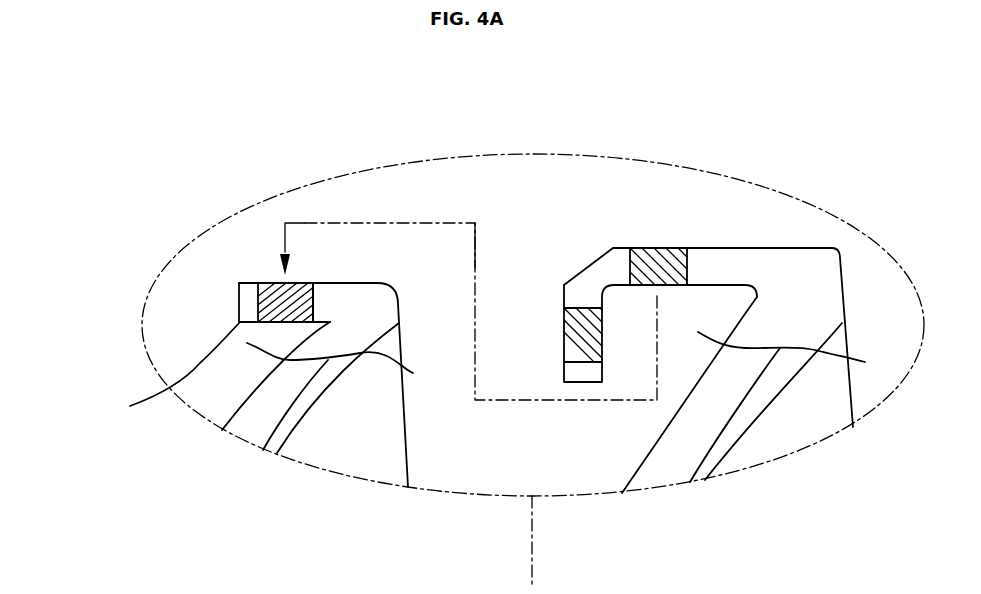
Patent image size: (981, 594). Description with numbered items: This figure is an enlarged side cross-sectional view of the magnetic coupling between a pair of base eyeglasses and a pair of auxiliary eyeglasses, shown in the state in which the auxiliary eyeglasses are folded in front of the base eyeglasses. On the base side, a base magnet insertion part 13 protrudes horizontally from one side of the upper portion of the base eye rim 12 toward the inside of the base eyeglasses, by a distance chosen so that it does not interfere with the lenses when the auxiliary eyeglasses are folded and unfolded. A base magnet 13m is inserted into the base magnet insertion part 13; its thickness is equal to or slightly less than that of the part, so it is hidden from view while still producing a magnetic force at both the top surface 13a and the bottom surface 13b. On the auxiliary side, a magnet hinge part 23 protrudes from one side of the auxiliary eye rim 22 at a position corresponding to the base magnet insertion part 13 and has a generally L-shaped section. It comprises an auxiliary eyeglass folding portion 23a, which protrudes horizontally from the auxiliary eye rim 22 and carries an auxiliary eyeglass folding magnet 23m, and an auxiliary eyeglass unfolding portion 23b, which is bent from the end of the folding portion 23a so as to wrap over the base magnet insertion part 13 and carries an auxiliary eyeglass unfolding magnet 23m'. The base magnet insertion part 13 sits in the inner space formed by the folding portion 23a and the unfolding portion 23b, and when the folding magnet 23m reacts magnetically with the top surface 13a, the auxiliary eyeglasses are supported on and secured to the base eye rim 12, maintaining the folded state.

The base eye rim 12 is at (250, 413).
The base magnet insertion part 13 is at (192, 200).
The top surface 13a is at (323, 283).
The bottom surface 13b is at (130, 406).
The base magnet 13m is at (277, 283).
The auxiliary eye rim 22 is at (690, 432).
The magnet hinge part 23 is at (589, 182).
The auxiliary eyeglass folding portion 23a is at (733, 247).
The auxiliary eyeglass unfolding portion 23b is at (564, 303).
The auxiliary eyeglass folding magnet 23m is at (660, 174).
The auxiliary eyeglass unfolding magnet 23m' is at (568, 349).